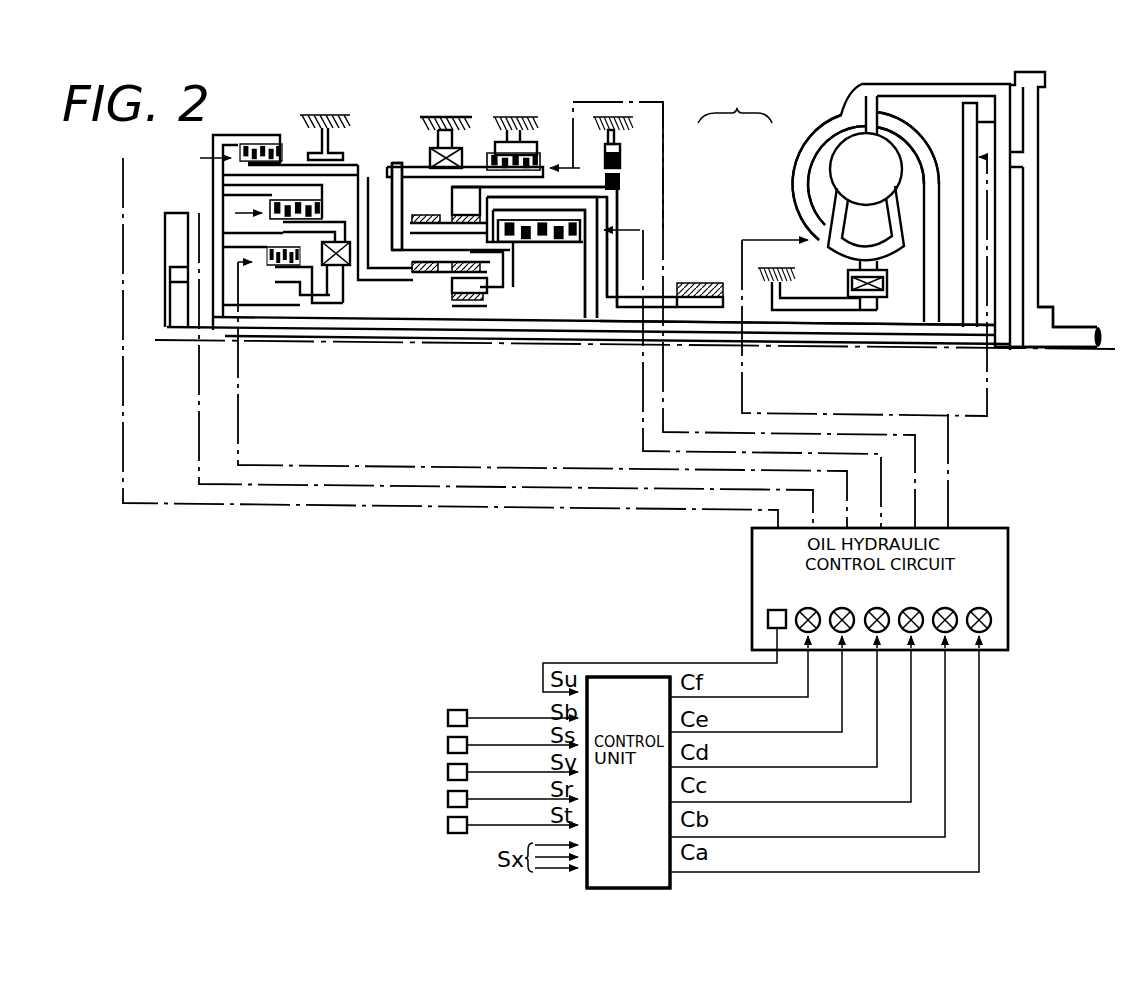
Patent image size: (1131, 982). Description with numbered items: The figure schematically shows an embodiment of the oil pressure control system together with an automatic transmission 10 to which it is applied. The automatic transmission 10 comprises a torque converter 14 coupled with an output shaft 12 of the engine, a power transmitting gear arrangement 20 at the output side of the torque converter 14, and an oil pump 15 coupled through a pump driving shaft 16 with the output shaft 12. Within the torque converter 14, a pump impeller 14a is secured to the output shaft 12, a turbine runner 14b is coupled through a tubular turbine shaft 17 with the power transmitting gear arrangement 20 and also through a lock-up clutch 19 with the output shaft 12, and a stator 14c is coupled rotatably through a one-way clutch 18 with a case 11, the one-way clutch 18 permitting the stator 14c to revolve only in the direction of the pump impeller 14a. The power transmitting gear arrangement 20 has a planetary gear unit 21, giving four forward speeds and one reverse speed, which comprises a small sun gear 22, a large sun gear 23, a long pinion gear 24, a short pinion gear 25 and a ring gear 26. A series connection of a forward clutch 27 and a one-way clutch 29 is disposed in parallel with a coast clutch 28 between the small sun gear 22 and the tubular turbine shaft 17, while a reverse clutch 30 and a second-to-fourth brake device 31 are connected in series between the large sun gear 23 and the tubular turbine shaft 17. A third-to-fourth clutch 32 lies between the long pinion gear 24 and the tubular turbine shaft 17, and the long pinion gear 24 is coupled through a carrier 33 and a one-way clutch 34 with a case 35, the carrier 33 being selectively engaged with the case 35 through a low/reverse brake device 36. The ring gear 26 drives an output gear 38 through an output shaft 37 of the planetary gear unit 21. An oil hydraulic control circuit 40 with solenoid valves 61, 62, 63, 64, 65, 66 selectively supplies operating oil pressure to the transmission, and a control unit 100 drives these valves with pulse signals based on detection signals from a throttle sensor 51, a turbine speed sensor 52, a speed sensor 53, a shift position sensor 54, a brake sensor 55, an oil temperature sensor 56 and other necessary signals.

The automatic transmission 10 is at (740, 108).
The case 11 is at (765, 284).
The output shaft 12 is at (1078, 327).
The torque converter 14 is at (773, 183).
The pump impeller 14a is at (813, 193).
The turbine runner 14b is at (913, 159).
The stator 14c is at (852, 236).
The oil pump 15 is at (166, 322).
The pump driving shaft 16 is at (835, 343).
The tubular turbine shaft 17 is at (888, 330).
The one-way clutch 18 is at (887, 283).
The lock-up clutch 19 is at (963, 296).
The power transmitting gear arrangement 20 is at (680, 195).
The planetary gear unit 21 is at (403, 266).
The small sun gear 22 is at (484, 295).
The large sun gear 23 is at (436, 273).
The long pinion gear 24 is at (417, 228).
The short pinion gear 25 is at (478, 266).
The ring gear 26 is at (471, 214).
The forward clutch 27 is at (333, 206).
The coast clutch 28 is at (267, 270).
The one-way clutch 29 is at (327, 266).
The reverse clutch 30 is at (287, 145).
The 2-4 brake device 31 is at (348, 149).
The 3-4 clutch 32 is at (578, 252).
The carrier 33 is at (403, 188).
The one-way clutch 34 is at (430, 158).
The case 35 is at (466, 138).
The low/reverse brake device 36 is at (548, 147).
The output shaft 37 is at (620, 207).
The output gear 38 is at (700, 281).
The oil hydraulic control circuit 40 is at (1008, 568).
The throttle sensor 51 is at (448, 825).
The turbine speed sensor 52 is at (448, 799).
The speed sensor 53 is at (448, 772).
The shift position sensor 54 is at (448, 747).
The brake sensor 55 is at (448, 720).
The oil temperature sensor 56 is at (768, 618).
The solenoid valve 61 is at (979, 608).
The solenoid valve 62 is at (945, 608).
The solenoid valve 63 is at (911, 608).
The solenoid valve 64 is at (877, 608).
The solenoid valve 65 is at (842, 608).
The solenoid valve 66 is at (808, 608).
The control unit 100 is at (676, 888).